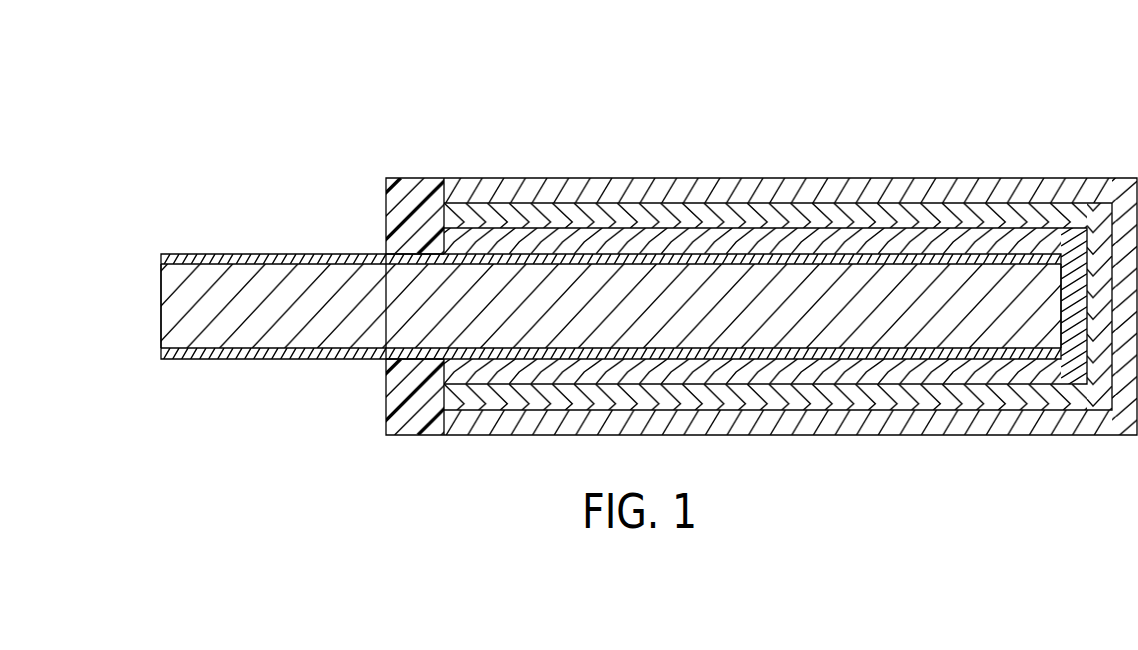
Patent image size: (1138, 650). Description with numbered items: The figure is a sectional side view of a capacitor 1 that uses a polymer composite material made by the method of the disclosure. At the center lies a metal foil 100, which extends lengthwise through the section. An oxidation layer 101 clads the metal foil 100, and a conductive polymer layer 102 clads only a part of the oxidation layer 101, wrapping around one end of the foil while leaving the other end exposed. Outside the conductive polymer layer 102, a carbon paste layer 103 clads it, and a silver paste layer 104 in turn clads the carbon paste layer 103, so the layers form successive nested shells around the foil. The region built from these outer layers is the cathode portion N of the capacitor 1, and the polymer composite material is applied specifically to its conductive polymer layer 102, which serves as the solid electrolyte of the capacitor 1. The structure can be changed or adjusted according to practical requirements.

The capacitor 1 is at (181, 65).
The metal foil 100 is at (160, 305).
The oxidation layer 101 is at (312, 255).
The conductive polymer layer 102 is at (830, 230).
The carbon paste layer 103 is at (756, 211).
The silver paste layer 104 is at (633, 180).
The cathode portion N is at (1021, 176).